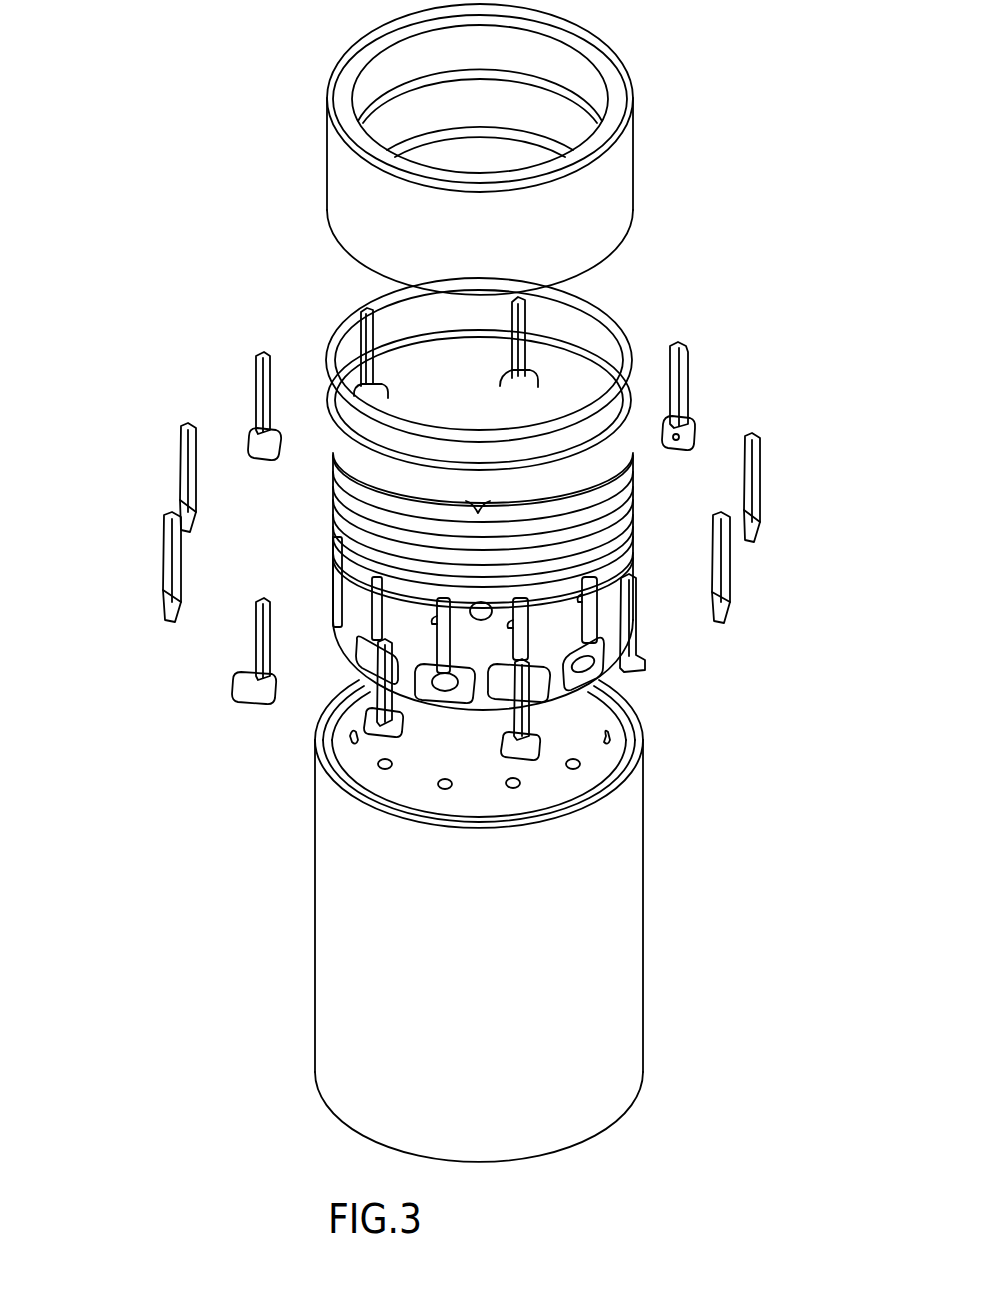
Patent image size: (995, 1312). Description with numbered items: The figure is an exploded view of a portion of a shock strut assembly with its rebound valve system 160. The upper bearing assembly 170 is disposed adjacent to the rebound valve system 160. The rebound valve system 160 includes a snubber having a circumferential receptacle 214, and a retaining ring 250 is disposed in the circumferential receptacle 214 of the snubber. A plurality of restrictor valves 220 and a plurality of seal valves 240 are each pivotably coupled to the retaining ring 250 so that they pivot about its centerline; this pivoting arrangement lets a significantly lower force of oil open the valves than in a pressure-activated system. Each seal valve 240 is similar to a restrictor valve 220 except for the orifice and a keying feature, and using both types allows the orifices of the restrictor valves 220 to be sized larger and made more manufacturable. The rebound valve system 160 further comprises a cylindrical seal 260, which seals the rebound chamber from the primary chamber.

The rebound valve system 160 is at (180, 313).
The upper bearing assembly 170 is at (344, 181).
The cylindrical seal 260 is at (618, 302).
The retaining ring 250 is at (345, 464).
The circumferential receptacle 214 is at (335, 562).
The restrictor valves 220 is at (257, 372).
The seal valves 240 is at (183, 458).